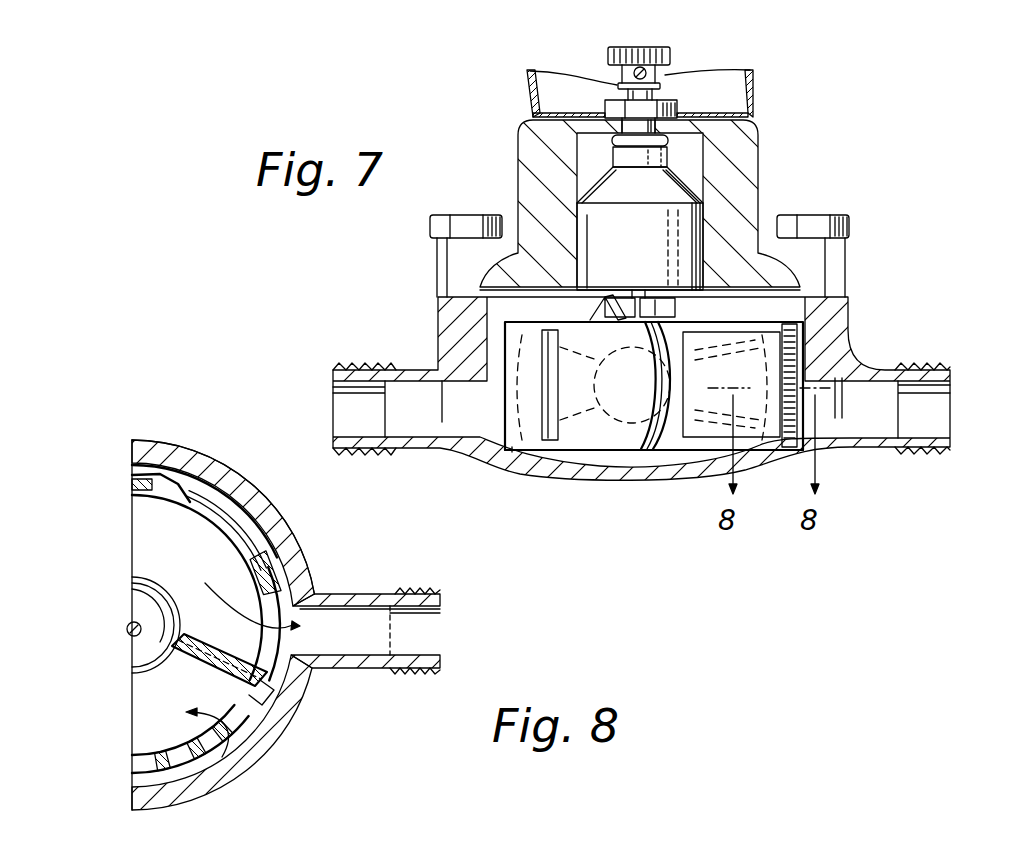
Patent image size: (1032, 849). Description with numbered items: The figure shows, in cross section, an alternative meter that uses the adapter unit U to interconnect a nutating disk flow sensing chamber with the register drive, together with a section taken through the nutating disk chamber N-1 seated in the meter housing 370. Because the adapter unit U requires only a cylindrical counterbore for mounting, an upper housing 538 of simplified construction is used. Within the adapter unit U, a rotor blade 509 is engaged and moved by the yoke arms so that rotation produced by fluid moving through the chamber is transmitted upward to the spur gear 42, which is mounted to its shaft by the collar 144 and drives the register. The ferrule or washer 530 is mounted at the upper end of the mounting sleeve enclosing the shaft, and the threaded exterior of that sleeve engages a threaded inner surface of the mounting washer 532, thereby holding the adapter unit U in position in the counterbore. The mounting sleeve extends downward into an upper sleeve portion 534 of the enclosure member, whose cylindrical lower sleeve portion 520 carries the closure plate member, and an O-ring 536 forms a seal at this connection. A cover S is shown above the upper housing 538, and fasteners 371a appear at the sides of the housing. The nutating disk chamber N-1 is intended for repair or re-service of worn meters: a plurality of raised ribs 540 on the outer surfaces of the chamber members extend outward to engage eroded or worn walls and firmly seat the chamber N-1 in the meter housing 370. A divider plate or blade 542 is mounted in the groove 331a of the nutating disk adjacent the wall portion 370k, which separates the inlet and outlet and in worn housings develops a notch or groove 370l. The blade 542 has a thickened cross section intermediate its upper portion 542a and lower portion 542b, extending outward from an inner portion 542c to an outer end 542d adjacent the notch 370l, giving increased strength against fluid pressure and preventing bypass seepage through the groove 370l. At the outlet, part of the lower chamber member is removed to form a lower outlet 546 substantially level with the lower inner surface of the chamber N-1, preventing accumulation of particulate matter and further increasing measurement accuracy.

In FIG. 7, the spur gear 42 is at (650, 47).
In FIG. 7, the collar 144 is at (648, 72).
In FIG. 7, the ferrule or washer 530 is at (620, 86).
In FIG. 7, the cover S is at (528, 82).
In FIG. 7, the mounting washer 532 is at (676, 102).
In FIG. 7, the upper housing 538 is at (525, 153).
In FIG. 7, the O-ring 536 is at (670, 142).
In FIG. 7, the upper sleeve portion 534 is at (670, 162).
In FIG. 7, the adapter unit U is at (704, 214).
In FIG. 7, the bolt 371a is at (850, 222).
In FIG. 7, the cylindrical lower sleeve portion 520 is at (655, 249).
In FIG. 7, the rotor blade 509 is at (662, 297).
In FIG. 7, the upper portion of blade 542a is at (764, 330).
In FIG. 7, the raised ribs 540 is at (548, 380).
In FIG. 8, the raised ribs 540 is at (182, 468).
In FIG. 7, the meter housing 370 is at (542, 474).
In FIG. 7, the nutating disk chamber N-1 is at (615, 457).
In FIG. 8, the nutating disk chamber N-1 is at (278, 752).
In FIG. 7, the lower portion of blade 542b is at (702, 451).
In FIG. 8, the inner portion of blade 542c is at (190, 600).
In FIG. 8, the lower outlet 546 is at (318, 592).
In FIG. 8, the outer end of blade 542d is at (262, 665).
In FIG. 8, the notch or groove 370l is at (272, 687).
In FIG. 8, the wall portion 370k is at (268, 697).
In FIG. 8, the divider plate or blade 542 is at (176, 672).
In FIG. 8, the groove 331a is at (225, 692).